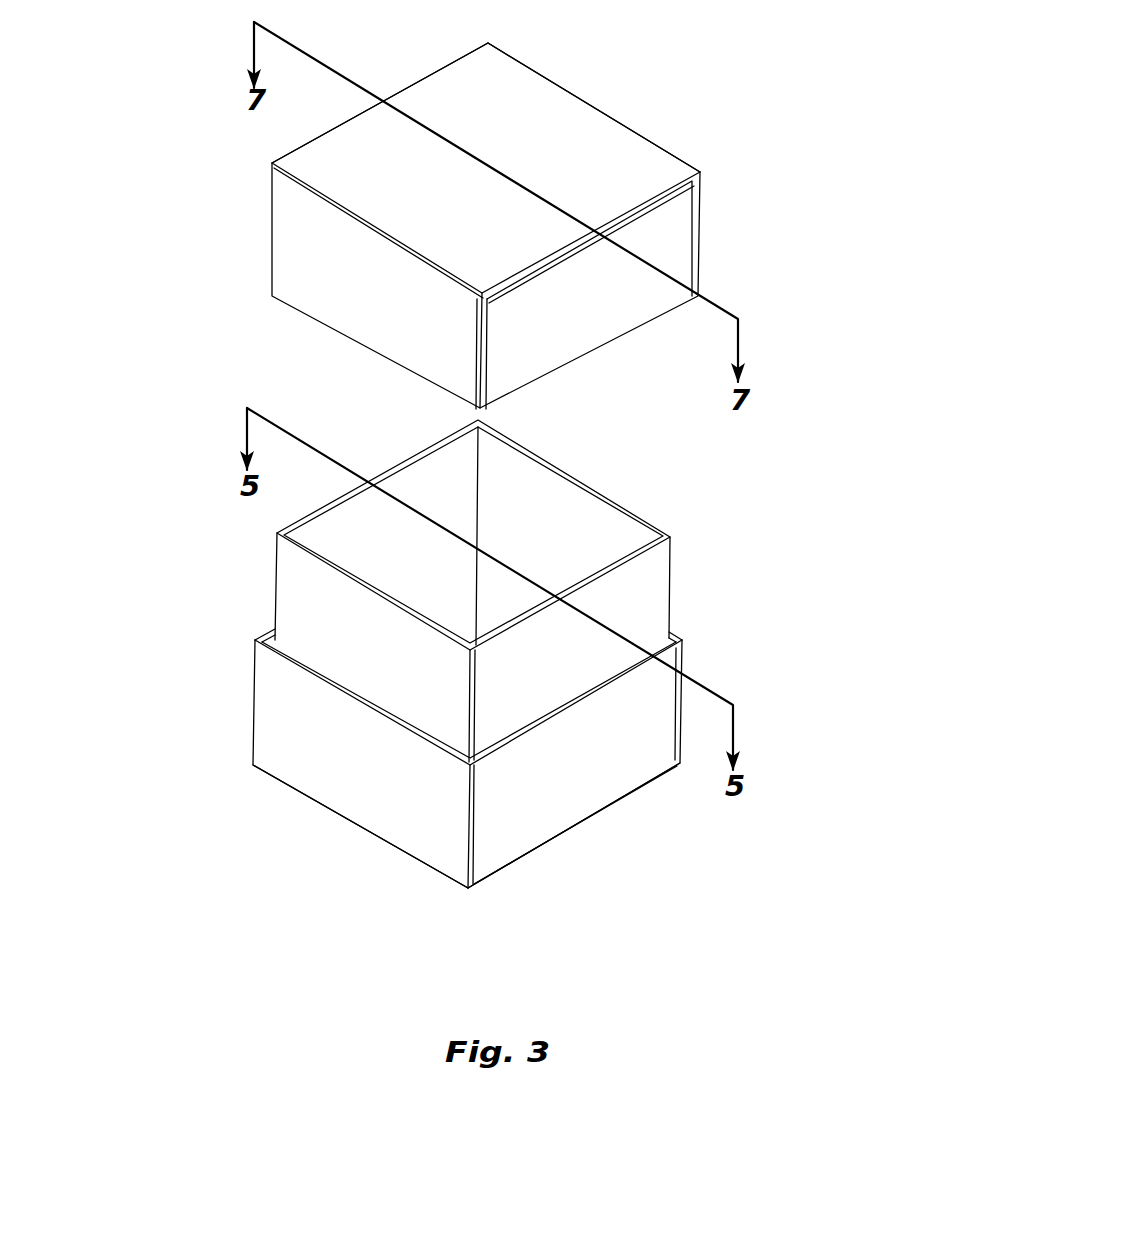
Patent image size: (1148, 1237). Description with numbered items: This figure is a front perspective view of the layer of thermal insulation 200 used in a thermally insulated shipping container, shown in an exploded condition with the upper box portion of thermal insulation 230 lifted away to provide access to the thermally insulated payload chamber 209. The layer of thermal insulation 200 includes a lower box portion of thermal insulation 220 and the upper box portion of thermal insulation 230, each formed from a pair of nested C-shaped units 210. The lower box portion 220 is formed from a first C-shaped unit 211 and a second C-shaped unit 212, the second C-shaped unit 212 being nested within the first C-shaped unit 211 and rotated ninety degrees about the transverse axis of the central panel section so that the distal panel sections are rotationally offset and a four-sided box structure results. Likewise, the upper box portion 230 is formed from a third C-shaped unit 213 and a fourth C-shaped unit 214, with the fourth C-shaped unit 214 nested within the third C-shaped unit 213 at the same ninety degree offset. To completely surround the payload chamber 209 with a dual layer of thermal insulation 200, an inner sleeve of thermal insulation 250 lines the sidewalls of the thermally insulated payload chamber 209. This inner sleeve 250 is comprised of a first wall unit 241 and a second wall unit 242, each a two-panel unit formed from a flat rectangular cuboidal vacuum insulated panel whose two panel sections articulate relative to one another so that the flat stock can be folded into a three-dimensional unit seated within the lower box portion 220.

The layer of thermal insulation 200 is at (745, 76).
The thermally insulated payload chamber 209 is at (562, 528).
The C-shaped unit 210 is at (454, 204).
The first C-shaped unit 211 is at (352, 793).
The second C-shaped unit 212 is at (548, 800).
The third C-shaped unit 213 is at (531, 90).
The fourth C-shaped unit 214 is at (678, 253).
The lower box portion of thermal insulation 220 is at (409, 758).
The upper box portion of thermal insulation 230 is at (668, 130).
The first wall unit 241 is at (290, 588).
The second wall unit 242 is at (620, 532).
The inner sleeve of thermal insulation 250 is at (499, 589).